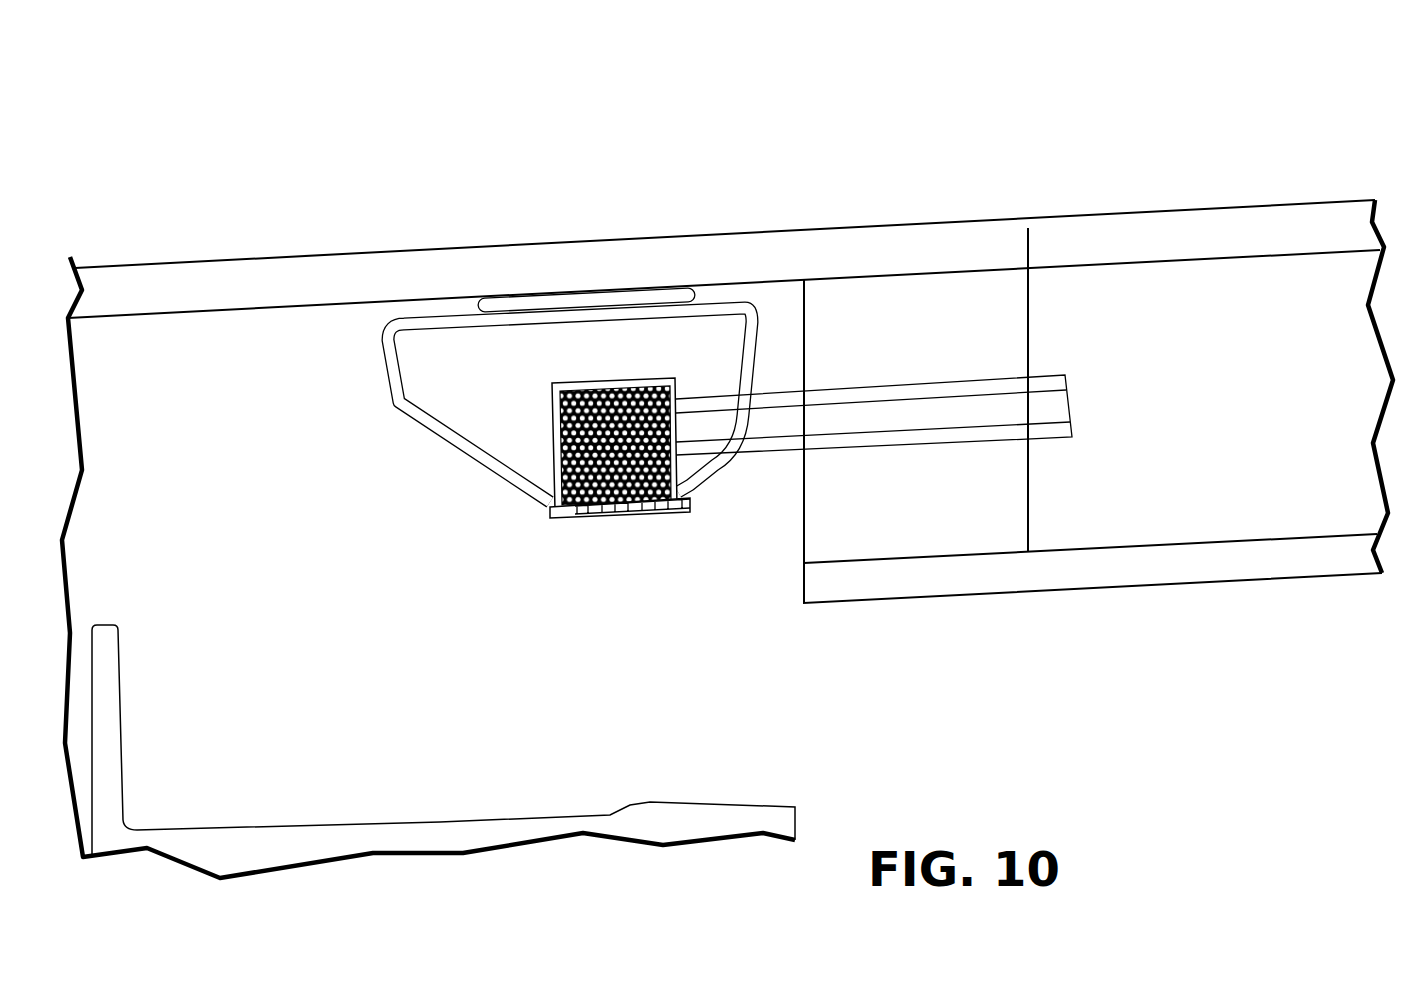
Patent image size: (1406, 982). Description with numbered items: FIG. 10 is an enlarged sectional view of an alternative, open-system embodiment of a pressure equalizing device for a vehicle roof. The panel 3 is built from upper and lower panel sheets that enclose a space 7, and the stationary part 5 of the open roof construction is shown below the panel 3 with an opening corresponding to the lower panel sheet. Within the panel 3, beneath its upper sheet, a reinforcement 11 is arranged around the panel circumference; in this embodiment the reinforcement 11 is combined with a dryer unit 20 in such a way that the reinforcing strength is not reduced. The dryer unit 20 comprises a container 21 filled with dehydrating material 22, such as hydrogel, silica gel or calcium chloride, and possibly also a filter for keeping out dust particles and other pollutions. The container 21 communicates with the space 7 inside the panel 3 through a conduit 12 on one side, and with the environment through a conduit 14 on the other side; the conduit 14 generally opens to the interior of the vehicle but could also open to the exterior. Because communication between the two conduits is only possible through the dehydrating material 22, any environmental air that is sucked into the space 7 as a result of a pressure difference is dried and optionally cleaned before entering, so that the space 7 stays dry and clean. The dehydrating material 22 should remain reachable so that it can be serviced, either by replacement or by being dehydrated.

The panel 3 is at (1240, 206).
The stationary part 5 is at (690, 823).
The space 7 is at (1158, 342).
The reinforcement 11 is at (435, 320).
The conduit 12 is at (1045, 412).
The conduit 14 is at (577, 518).
The dryer unit 20 is at (607, 317).
The container 21 is at (568, 390).
The dehydrating material 22 is at (652, 405).